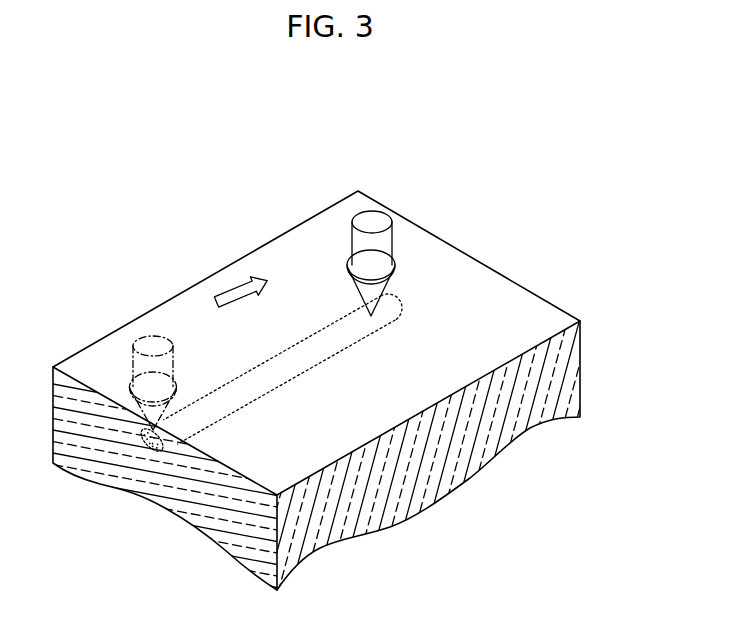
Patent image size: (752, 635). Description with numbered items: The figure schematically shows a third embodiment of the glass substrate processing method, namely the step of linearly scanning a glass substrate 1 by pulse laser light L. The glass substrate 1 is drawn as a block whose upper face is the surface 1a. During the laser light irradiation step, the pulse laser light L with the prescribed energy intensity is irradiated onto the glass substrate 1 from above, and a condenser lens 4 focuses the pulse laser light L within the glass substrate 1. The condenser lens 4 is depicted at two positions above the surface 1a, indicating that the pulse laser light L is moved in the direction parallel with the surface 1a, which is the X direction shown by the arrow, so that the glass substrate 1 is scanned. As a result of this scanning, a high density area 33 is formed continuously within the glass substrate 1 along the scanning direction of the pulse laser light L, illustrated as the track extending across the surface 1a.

The glass substrate 1 is at (580, 383).
The surface of the glass substrate 1a is at (538, 318).
The condenser lens 4 is at (130, 390).
The high density area 33 is at (148, 441).
The pulse laser light L is at (173, 352).
The X direction X is at (234, 292).